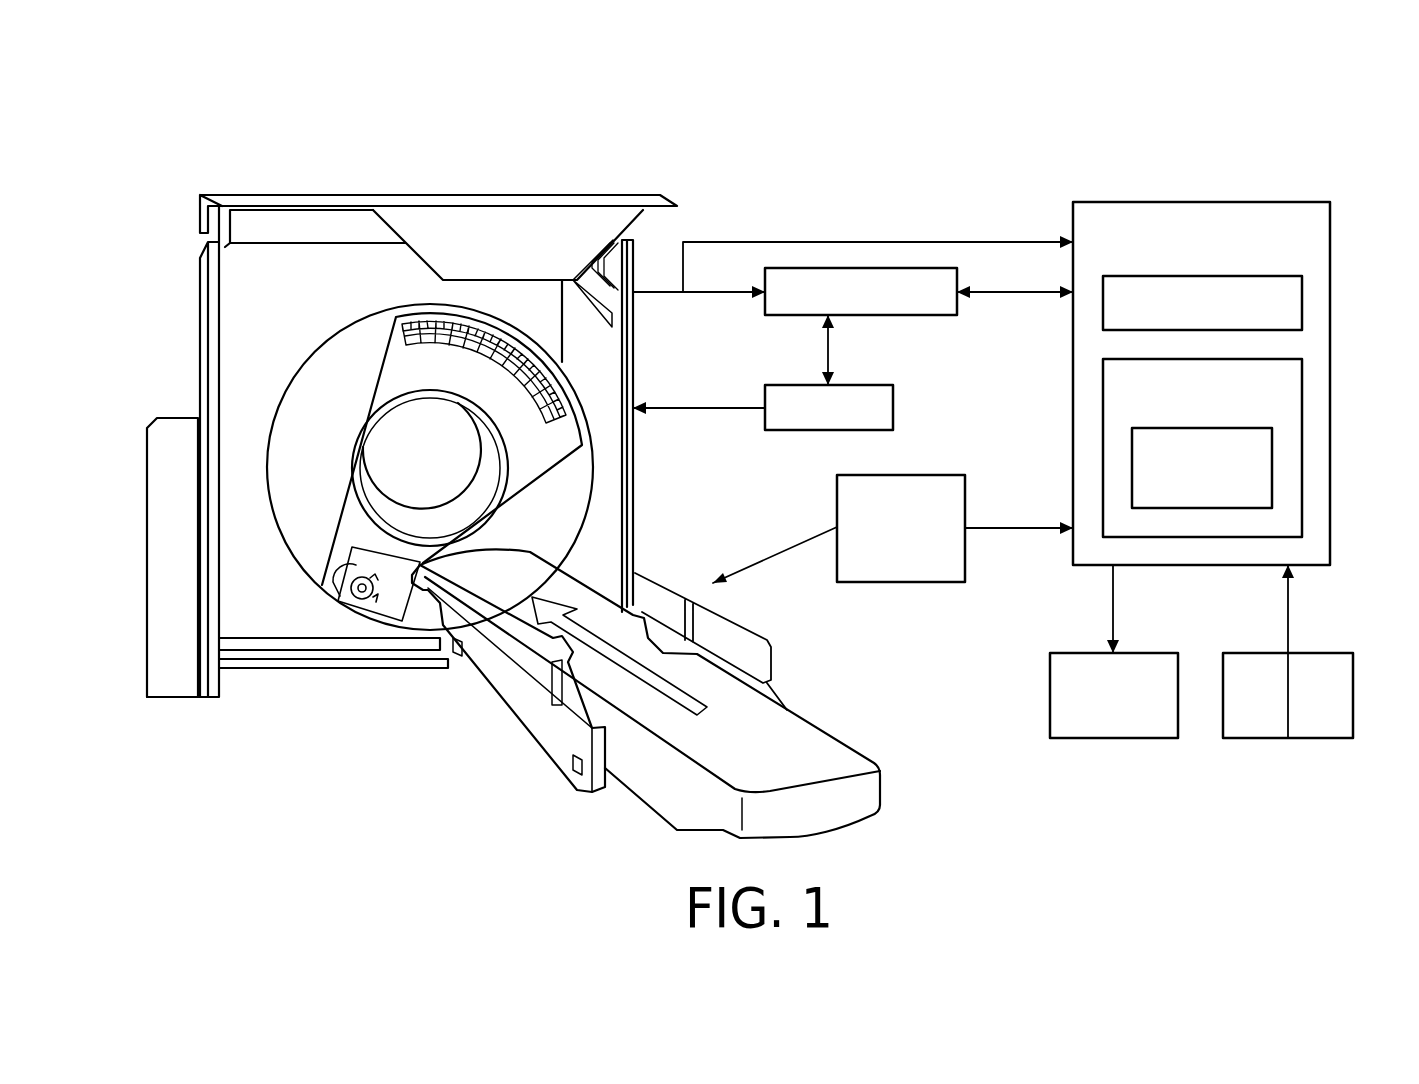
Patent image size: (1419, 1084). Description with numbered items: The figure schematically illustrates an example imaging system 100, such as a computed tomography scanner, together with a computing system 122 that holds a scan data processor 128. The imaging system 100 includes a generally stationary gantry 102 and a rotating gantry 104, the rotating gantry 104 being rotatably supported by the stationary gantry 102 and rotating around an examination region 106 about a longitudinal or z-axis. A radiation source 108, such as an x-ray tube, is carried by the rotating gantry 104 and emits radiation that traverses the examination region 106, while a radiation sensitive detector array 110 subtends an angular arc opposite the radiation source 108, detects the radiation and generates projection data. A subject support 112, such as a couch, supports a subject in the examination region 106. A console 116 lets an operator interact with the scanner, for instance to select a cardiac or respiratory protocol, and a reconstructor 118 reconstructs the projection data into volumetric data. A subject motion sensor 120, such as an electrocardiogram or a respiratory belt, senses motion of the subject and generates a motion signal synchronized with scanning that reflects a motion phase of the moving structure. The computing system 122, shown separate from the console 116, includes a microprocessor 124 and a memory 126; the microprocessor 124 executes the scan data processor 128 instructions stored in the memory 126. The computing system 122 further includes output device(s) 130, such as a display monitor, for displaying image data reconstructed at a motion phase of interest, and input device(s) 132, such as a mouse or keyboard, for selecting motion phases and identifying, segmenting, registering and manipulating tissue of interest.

The imaging system 100 is at (175, 149).
The stationary gantry 102 is at (212, 330).
The rotating gantry 104 is at (395, 367).
The examination region 106 is at (407, 445).
The radiation source 108 is at (358, 602).
The detector array 110 is at (543, 373).
The subject support 112 is at (813, 765).
The console 116 is at (785, 430).
The reconstructor 118 is at (925, 317).
The subject motion sensor 120 is at (940, 582).
The computing system 122 is at (1200, 202).
The microprocessor 124 is at (1302, 303).
The memory 126 is at (1302, 388).
The scan data processor 128 is at (1272, 467).
The output device(s) 130 is at (1112, 738).
The input device(s) 132 is at (1290, 738).